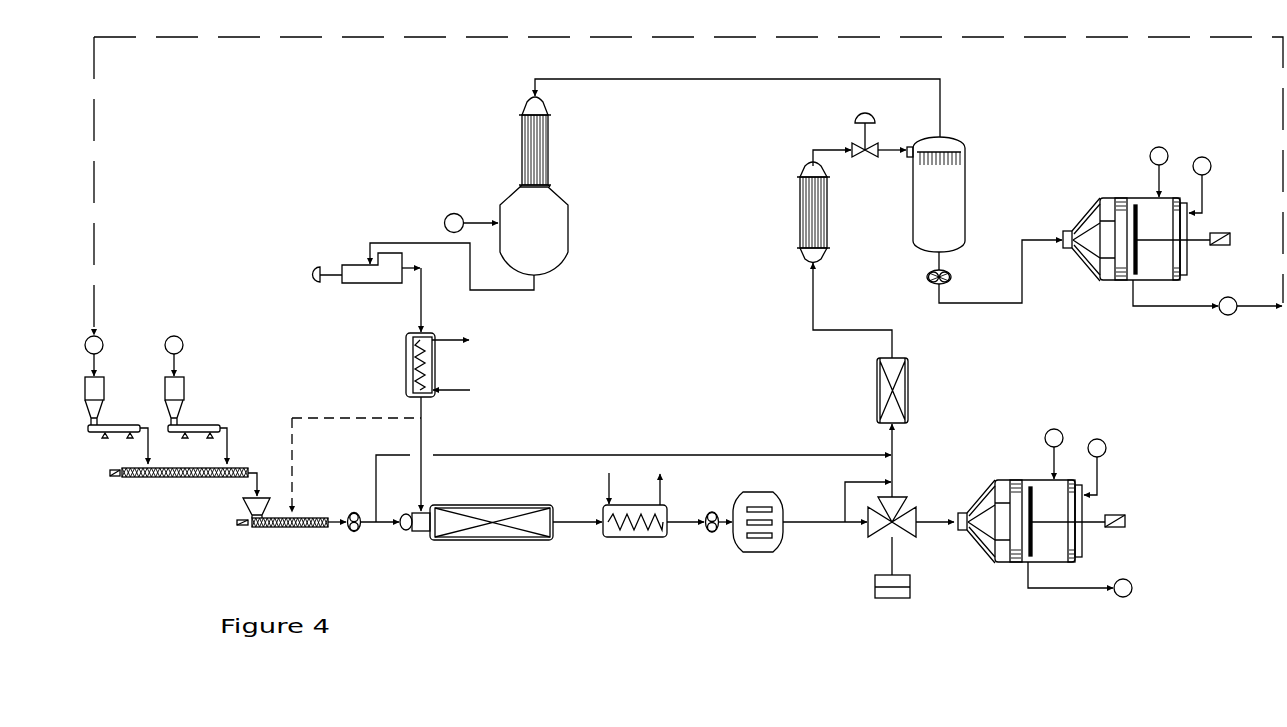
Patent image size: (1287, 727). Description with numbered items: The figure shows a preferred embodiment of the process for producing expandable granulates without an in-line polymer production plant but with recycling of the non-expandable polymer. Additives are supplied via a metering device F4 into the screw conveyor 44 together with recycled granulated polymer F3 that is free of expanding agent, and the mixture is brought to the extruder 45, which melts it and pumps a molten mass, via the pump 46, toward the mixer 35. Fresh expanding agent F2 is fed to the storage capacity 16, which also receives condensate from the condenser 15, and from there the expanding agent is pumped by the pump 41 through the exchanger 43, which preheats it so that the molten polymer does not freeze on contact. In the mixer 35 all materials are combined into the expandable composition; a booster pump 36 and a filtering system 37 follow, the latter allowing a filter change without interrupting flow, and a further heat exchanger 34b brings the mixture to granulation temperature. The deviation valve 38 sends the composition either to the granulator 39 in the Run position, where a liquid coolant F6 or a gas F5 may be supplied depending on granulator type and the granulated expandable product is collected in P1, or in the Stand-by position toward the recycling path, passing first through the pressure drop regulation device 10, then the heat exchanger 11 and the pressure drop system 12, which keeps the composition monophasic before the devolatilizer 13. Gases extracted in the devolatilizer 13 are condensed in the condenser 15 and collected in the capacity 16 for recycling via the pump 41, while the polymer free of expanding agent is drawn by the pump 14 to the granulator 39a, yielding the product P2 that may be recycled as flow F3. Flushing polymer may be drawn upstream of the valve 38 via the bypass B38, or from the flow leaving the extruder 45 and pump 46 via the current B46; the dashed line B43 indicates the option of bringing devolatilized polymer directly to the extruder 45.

The pressure drop regulation device 10 is at (877, 382).
The heat exchanger 11 is at (806, 154).
The pressure drop system 12 is at (867, 165).
The devolatilizer 13 is at (930, 135).
The pump 14 is at (930, 284).
The condenser 15 is at (522, 92).
The storage capacity 16 is at (497, 197).
The heat exchanger 34b is at (622, 542).
The mixer 35 is at (485, 542).
The booster pump 36 is at (707, 537).
The filtering system 37 is at (763, 555).
The deviation valve 38 is at (895, 607).
The granulator 39 is at (990, 568).
The granulator for non-expandable compositions 39a is at (1095, 287).
The pump 41 is at (372, 288).
The exchanger 43 is at (404, 359).
The screw conveyor 44 is at (237, 460).
The extruder 45 is at (291, 512).
The pump 46 is at (355, 511).
The fresh expanding agent F2 is at (447, 214).
The recycled granulated polymer F3 is at (102, 348).
The metering device for additives F4 is at (181, 348).
The gas supply F5 is at (1050, 428).
The liquid coolant supply F6 is at (1104, 443).
The granulated expandable product P1 is at (1128, 578).
The non-expandable granulated product P2 is at (1232, 297).
The dashed line bypass B43 is at (356, 455).
The flushing current B46 is at (633, 478).
The bypass B38 is at (864, 492).